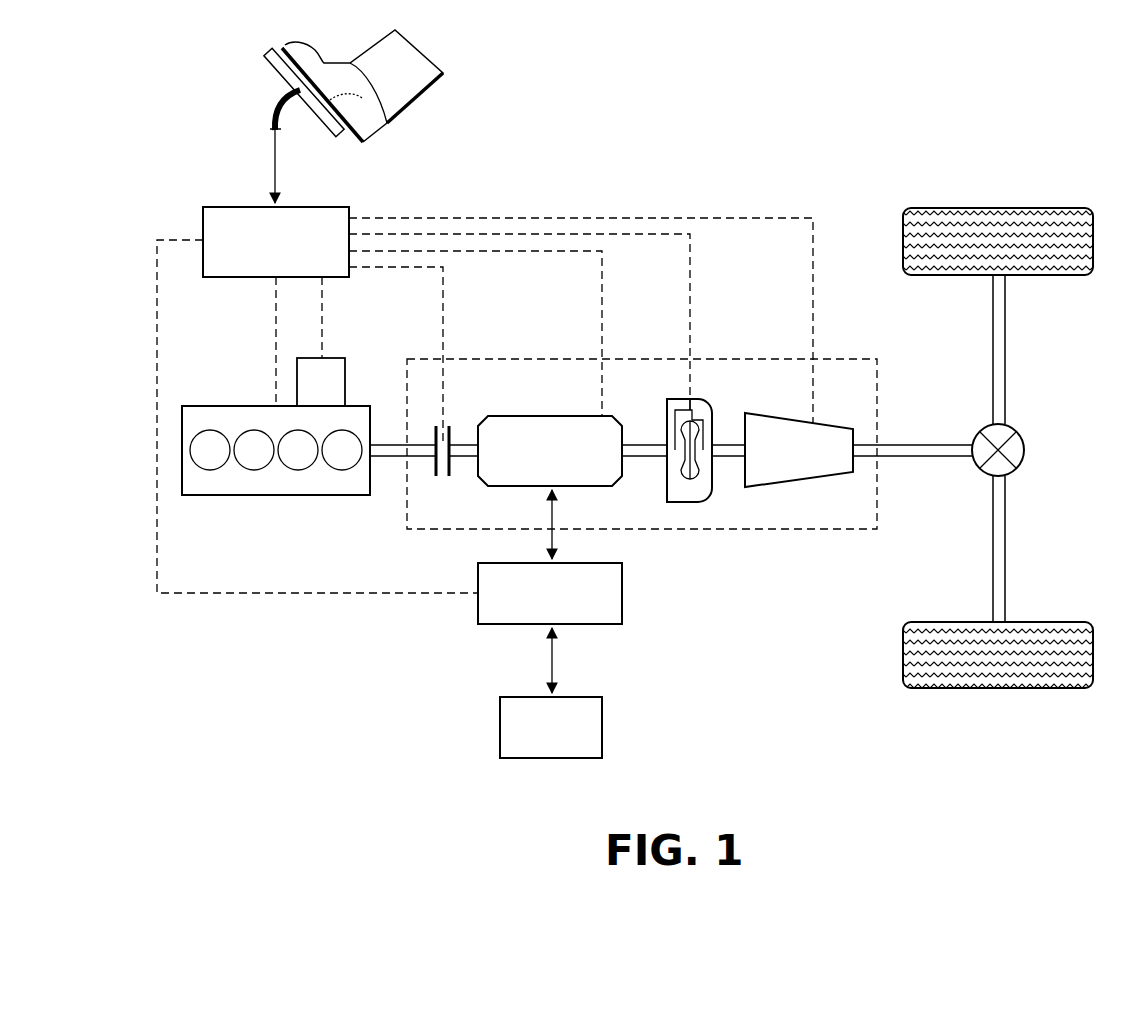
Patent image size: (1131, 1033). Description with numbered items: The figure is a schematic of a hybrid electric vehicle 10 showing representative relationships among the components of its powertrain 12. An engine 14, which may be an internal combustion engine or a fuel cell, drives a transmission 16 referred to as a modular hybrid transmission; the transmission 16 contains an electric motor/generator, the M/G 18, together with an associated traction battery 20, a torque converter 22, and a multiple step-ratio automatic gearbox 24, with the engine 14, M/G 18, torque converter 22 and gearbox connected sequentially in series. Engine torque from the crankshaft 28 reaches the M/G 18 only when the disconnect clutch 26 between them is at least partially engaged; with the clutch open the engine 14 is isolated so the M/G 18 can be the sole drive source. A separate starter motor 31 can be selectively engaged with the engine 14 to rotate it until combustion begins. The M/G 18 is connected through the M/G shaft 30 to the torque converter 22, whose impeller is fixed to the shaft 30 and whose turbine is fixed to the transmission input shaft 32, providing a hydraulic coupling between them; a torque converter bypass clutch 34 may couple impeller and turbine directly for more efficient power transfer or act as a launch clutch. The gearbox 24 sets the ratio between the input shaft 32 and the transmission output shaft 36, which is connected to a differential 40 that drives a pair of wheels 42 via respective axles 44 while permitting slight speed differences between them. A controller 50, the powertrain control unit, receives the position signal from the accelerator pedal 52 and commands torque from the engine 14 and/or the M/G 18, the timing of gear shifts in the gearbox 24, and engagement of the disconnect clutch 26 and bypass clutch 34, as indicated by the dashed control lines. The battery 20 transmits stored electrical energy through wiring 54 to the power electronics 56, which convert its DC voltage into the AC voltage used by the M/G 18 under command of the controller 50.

The hybrid electric vehicle 10 is at (790, 127).
The powertrain 12 is at (388, 637).
The engine 14 is at (232, 406).
The transmission 16 is at (655, 358).
The electric motor/generator (M/G) 18 is at (553, 416).
The traction battery 20 is at (500, 727).
The torque converter 22 is at (686, 503).
The gearbox 24 is at (800, 487).
The disconnect clutch 26 is at (451, 464).
The crankshaft 28 is at (399, 445).
The M/G shaft 30 is at (461, 444).
The starter motor 31 is at (332, 358).
The transmission input shaft 32 is at (724, 440).
The torque converter bypass clutch 34 is at (700, 399).
The transmission output shaft 36 is at (940, 442).
The differential 40 is at (1027, 450).
The wheels 42 is at (1000, 208).
The axles 44 is at (1007, 355).
The controller (powertrain control unit) 50 is at (243, 207).
The accelerator pedal 52 is at (284, 84).
The wiring 54 is at (548, 668).
The power electronics 56 is at (622, 593).